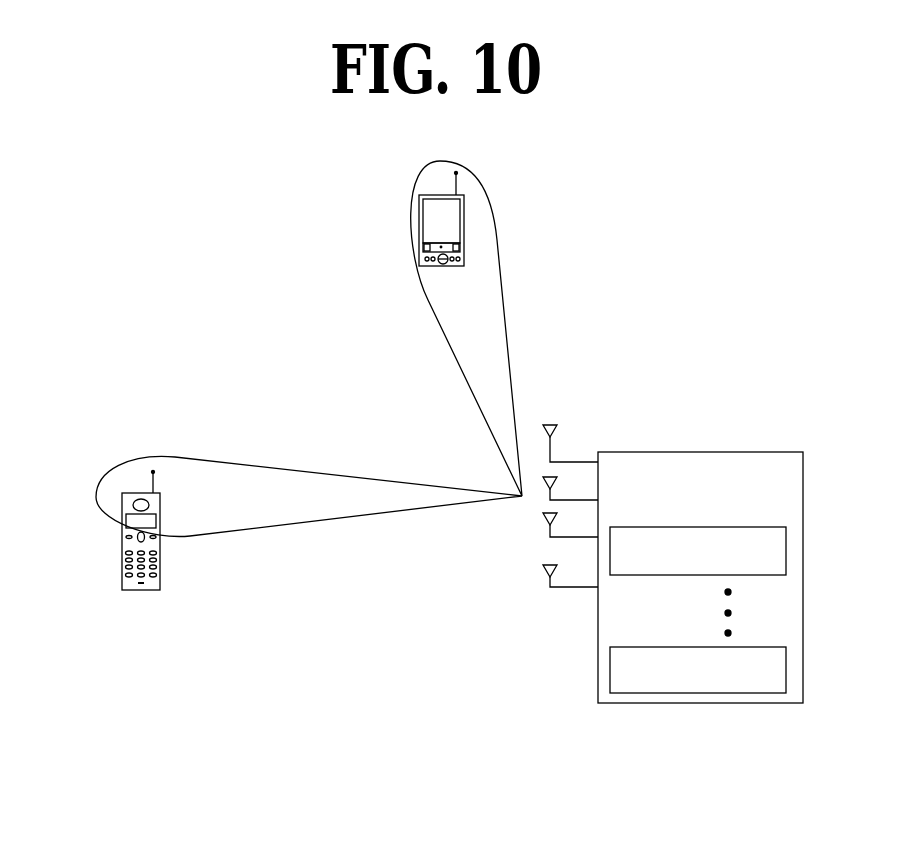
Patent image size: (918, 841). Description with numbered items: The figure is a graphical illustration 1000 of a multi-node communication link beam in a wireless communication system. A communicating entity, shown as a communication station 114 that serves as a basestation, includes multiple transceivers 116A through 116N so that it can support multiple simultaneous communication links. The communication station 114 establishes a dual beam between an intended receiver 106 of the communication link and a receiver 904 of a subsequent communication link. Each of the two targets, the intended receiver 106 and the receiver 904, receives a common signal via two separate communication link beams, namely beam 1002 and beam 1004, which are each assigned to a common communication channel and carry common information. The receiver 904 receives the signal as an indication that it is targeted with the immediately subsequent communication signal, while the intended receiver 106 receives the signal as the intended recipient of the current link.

The multi-node communication link beam illustration 1000 is at (706, 144).
The receiver 904 is at (464, 212).
The beam 1004 is at (504, 300).
The beam 1002 is at (277, 466).
The intended receiver 106 is at (128, 528).
The communication station 114 is at (742, 452).
The transceiver 116A is at (702, 576).
The transceiver 116N is at (705, 647).